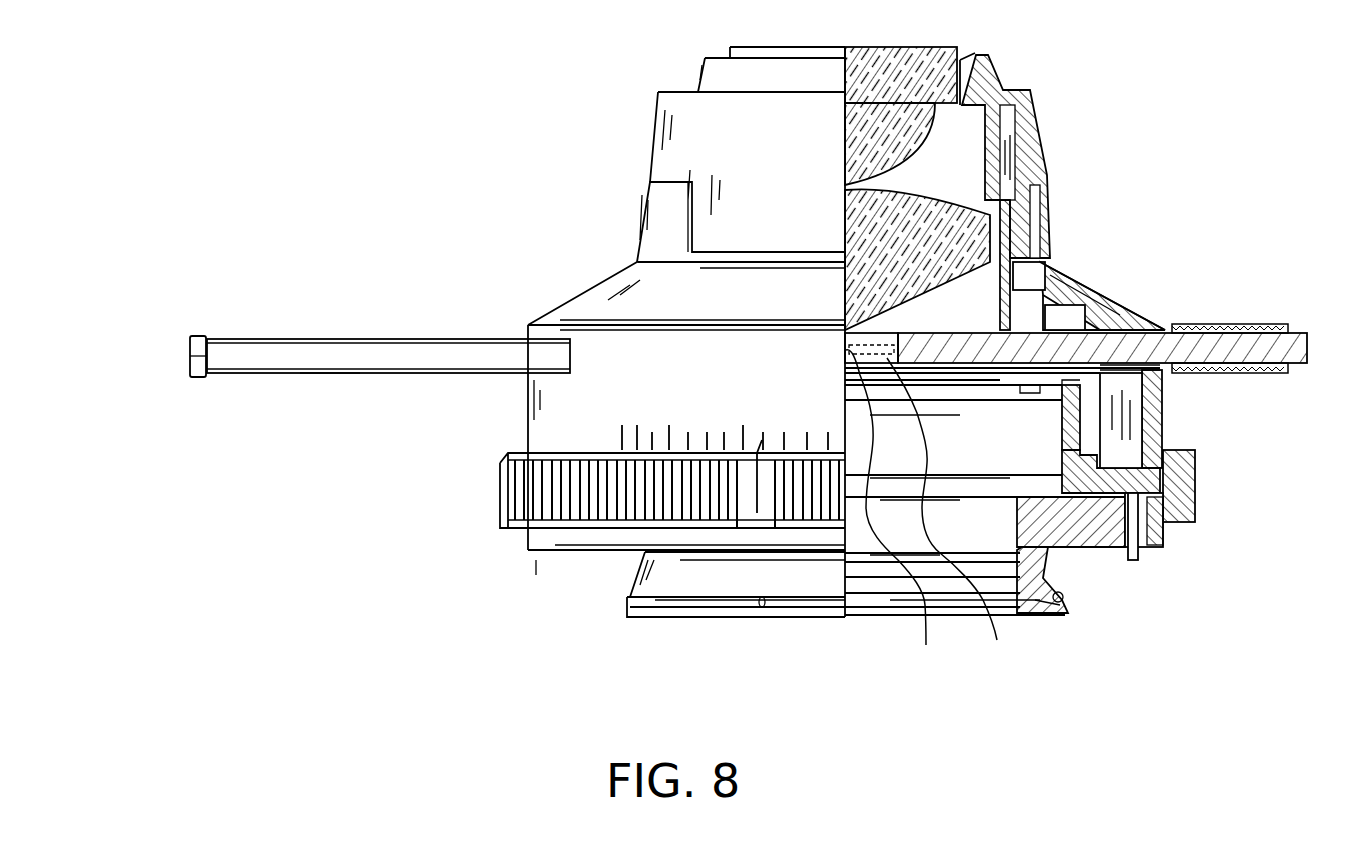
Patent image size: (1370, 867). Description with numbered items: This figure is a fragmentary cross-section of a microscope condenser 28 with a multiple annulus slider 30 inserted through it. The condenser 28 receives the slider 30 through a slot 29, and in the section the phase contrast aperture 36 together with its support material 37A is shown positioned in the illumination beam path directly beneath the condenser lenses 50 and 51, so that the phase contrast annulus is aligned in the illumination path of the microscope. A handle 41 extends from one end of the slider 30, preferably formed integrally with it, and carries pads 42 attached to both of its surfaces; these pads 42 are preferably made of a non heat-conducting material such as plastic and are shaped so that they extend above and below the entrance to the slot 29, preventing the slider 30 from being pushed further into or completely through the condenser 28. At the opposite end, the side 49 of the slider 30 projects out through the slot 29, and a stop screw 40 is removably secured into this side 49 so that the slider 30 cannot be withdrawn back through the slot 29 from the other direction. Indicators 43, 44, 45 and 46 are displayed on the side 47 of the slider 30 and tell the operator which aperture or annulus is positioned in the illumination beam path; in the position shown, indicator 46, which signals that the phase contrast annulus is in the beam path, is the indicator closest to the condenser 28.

The condenser 28 is at (558, 188).
The slot 29 is at (1167, 329).
The slider 30 is at (312, 256).
The phase contrast aperture 36 is at (952, 517).
The support material 37A is at (903, 516).
The stop screw 40 is at (192, 340).
The handle 41 is at (1246, 290).
The pads 42 is at (1272, 327).
The indicator 43 is at (252, 340).
The indicator 44 is at (385, 338).
The indicator 45 is at (462, 345).
The indicator 46 is at (525, 355).
The side 47 is at (335, 357).
The side 49 is at (200, 355).
The lens 50 is at (920, 266).
The lens 51 is at (895, 149).